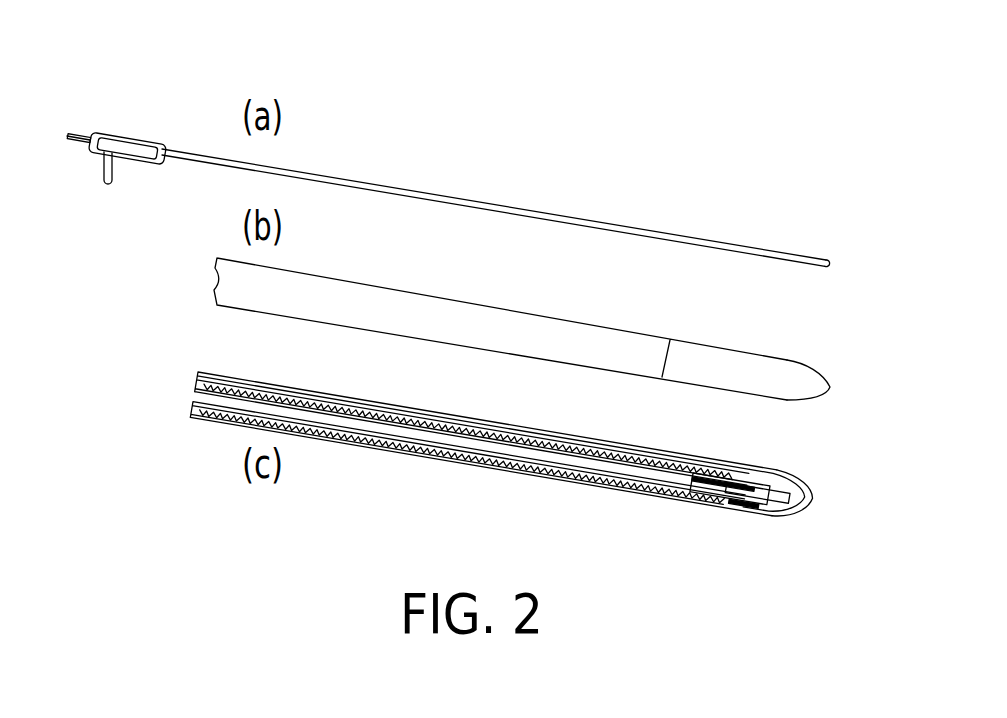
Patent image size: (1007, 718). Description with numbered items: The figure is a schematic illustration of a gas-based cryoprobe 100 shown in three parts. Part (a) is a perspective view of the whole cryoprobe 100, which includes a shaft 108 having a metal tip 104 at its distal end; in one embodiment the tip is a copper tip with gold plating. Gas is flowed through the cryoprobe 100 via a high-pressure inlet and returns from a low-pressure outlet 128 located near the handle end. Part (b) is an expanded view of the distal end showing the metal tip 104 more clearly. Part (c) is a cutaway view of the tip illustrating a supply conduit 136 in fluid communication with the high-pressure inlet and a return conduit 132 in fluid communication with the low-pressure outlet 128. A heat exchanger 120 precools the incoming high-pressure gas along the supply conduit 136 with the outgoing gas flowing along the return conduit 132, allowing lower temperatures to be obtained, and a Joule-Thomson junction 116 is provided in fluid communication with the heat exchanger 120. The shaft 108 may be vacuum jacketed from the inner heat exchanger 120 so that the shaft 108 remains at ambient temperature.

The cryoprobe 100 is at (447, 323).
The metal tip 104 is at (812, 258).
The shaft 108 is at (462, 198).
The Joule-Thomson junction 116 is at (750, 505).
The heat exchanger 120 is at (552, 475).
The low-pressure outlet 128 is at (100, 178).
The return conduit 132 is at (215, 376).
The supply conduit 136 is at (228, 420).